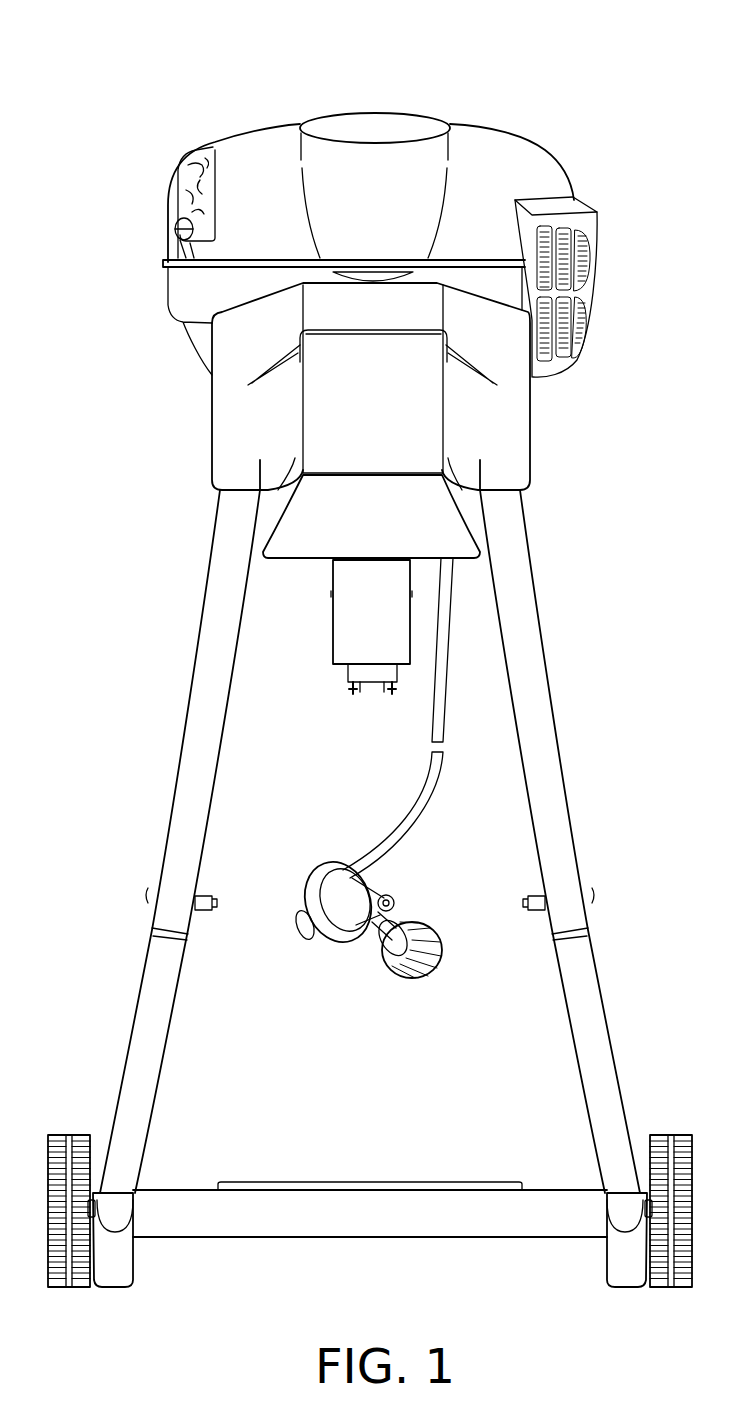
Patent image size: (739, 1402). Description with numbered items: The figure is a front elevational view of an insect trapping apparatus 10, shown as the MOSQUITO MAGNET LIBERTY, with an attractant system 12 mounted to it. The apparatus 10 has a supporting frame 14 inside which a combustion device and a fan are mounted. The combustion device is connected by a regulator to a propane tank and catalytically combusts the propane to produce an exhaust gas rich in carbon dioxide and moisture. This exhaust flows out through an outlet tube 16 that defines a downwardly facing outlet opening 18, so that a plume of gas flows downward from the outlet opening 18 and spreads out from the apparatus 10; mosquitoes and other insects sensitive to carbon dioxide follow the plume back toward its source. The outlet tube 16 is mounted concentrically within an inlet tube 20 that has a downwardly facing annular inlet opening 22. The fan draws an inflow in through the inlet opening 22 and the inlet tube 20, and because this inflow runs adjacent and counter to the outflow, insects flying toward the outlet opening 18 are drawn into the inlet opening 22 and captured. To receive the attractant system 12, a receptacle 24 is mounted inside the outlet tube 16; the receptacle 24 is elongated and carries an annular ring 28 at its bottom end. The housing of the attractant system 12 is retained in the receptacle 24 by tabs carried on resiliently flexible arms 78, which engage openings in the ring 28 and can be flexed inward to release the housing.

The insect trapping apparatus 10 is at (578, 94).
The attractant system 12 is at (323, 697).
The supporting frame 14 is at (513, 511).
The outlet tube 16 is at (345, 628).
The outlet opening 18 is at (403, 666).
The inlet tube 20 is at (290, 546).
The inlet opening 22 is at (425, 562).
The receptacle 24 is at (364, 692).
The annular ring 28 is at (385, 692).
The resiliently flexible arms 78 is at (394, 686).